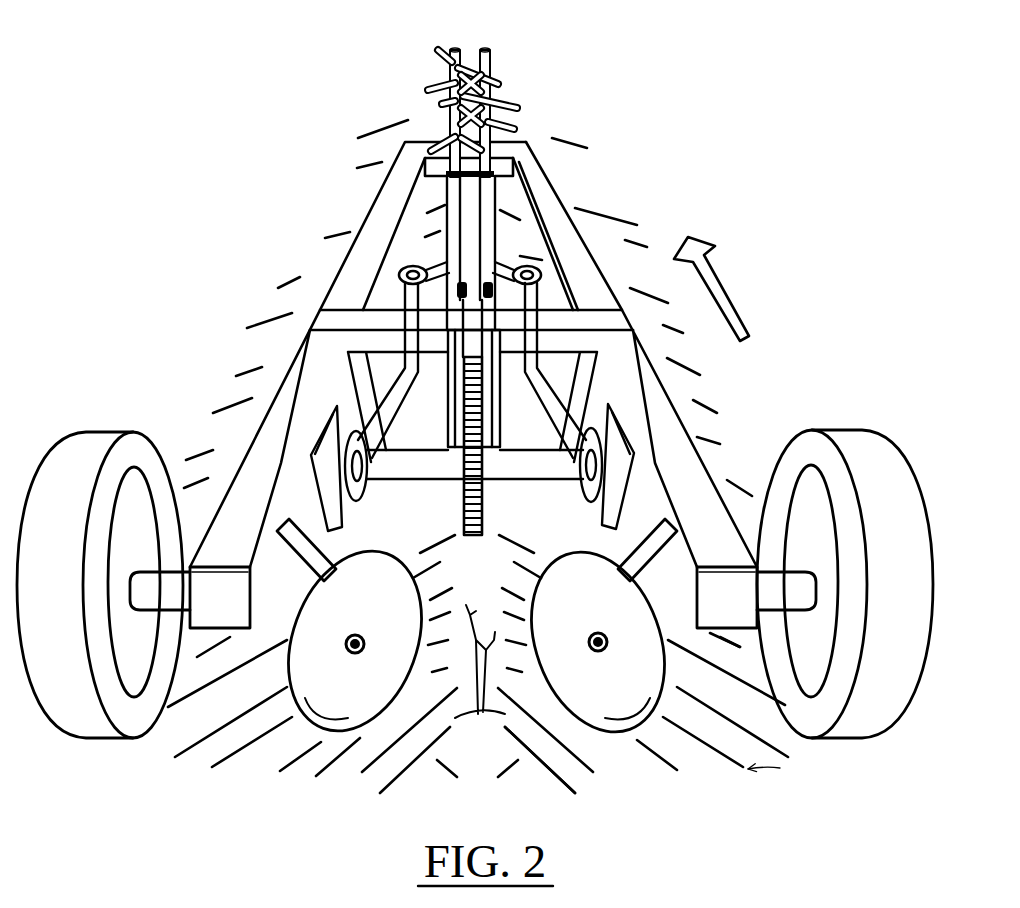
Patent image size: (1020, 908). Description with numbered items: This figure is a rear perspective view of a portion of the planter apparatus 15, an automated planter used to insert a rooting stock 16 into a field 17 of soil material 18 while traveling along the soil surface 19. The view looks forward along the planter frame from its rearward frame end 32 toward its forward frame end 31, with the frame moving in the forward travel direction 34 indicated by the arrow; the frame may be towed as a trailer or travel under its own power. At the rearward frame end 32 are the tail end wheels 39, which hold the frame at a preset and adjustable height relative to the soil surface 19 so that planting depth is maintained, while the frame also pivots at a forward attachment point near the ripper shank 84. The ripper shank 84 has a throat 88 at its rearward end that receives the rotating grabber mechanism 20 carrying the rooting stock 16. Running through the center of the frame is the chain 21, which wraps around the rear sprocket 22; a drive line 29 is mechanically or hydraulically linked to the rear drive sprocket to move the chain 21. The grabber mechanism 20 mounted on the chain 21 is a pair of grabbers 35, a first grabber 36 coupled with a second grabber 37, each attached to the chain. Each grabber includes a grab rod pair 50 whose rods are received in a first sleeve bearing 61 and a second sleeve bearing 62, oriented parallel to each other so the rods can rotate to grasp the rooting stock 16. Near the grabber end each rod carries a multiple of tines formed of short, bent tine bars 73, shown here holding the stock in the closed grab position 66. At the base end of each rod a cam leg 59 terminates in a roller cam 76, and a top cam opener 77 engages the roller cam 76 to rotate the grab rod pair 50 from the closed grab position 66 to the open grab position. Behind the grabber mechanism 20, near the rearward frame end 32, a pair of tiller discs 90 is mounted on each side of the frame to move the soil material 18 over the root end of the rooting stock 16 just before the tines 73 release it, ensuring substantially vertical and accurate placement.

The planter apparatus 15 is at (286, 131).
The rooting stock 16 is at (481, 670).
The field 17 is at (723, 716).
The soil material 18 is at (617, 766).
The soil surface 19 is at (779, 770).
The grabber mechanism 20 is at (351, 96).
The chain 21 is at (466, 492).
The rear sprocket 22 is at (468, 518).
The drive line 29 is at (428, 478).
The forward frame end 31 is at (405, 155).
The rearward frame end 32 is at (718, 528).
The forward travel direction 34 is at (722, 291).
The pair of grabbers 35 is at (421, 90).
The first grabber 36 is at (432, 66).
The second grabber 37 is at (502, 66).
The tail end wheels 39 is at (116, 437).
The grab rod pair 50 is at (486, 49).
The cam leg 59 is at (437, 263).
The first sleeve bearing 61 is at (445, 207).
The second sleeve bearing 62 is at (488, 195).
The closed grab position 66 is at (541, 77).
The tine bar 73 is at (426, 108).
The roller cam 76 is at (398, 274).
The top cam opener 77 is at (560, 446).
The ripper shank 84 is at (520, 232).
The throat 88 is at (505, 446).
The tiller discs 90 is at (318, 688).